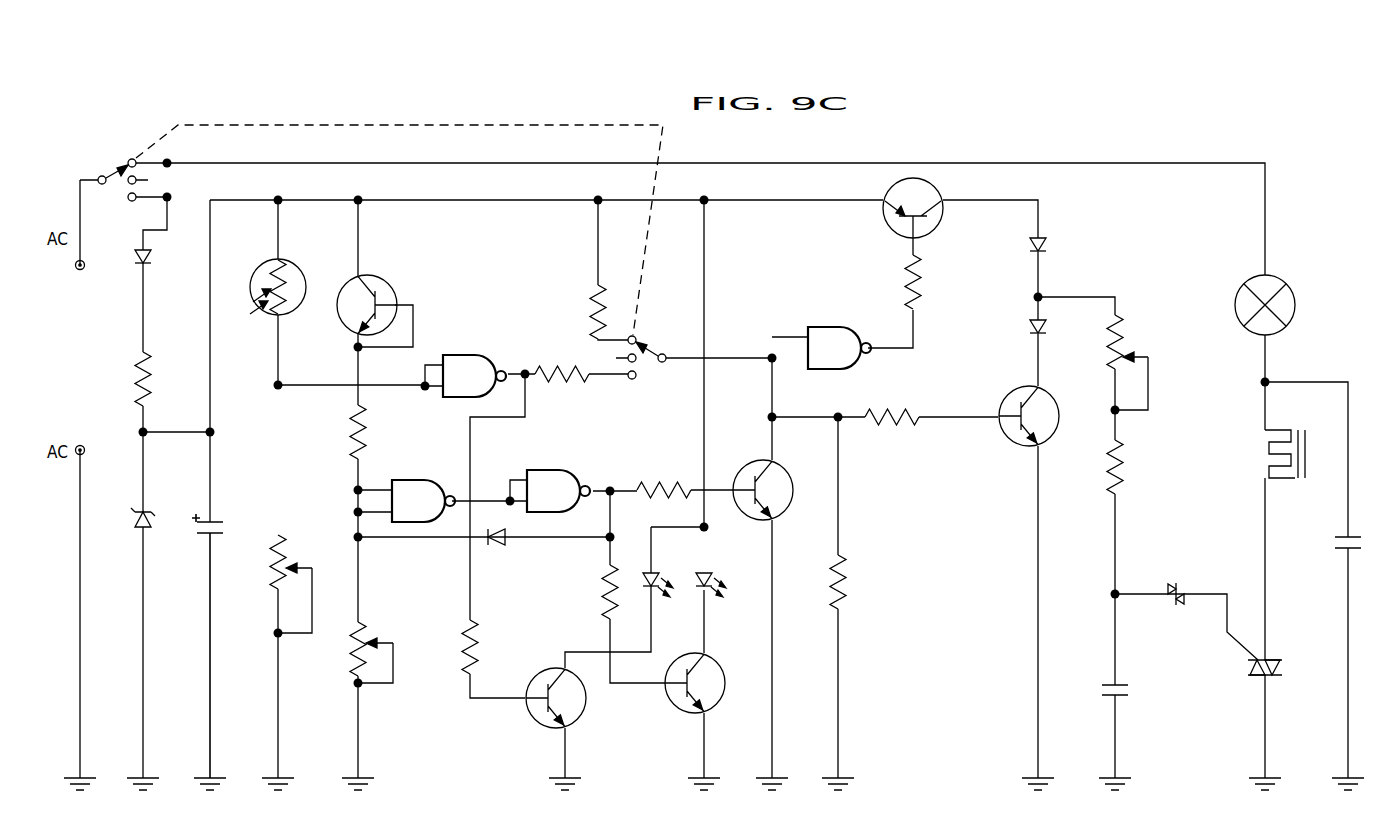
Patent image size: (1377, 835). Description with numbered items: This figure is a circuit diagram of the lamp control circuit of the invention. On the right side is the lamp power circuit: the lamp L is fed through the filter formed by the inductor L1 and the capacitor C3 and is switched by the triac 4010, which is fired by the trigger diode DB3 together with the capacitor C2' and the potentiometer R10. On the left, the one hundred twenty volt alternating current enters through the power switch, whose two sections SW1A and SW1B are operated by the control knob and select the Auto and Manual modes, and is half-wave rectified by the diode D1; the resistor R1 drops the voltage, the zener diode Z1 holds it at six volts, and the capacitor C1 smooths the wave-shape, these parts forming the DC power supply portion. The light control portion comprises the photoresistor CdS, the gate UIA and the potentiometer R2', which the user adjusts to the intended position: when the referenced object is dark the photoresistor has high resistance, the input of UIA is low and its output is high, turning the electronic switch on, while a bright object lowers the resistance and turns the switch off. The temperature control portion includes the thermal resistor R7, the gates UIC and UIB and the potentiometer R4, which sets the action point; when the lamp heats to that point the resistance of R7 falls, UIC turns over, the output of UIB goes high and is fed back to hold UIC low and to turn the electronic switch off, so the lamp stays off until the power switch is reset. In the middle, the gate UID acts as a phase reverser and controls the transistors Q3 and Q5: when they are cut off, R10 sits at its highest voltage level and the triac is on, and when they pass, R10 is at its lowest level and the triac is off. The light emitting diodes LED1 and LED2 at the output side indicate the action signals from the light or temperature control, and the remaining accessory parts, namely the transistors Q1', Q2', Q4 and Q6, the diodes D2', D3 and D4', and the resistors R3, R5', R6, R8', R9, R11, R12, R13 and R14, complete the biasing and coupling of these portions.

The power switch section SW1A is at (104, 180).
The power switch section SW1B is at (647, 359).
The diode D1 is at (131, 301).
The resistor R1 is at (157, 392).
The zener diode Z1 is at (137, 605).
The capacitor C1 is at (215, 636).
The photoresistor CdS is at (274, 277).
The potentiometer R2' is at (274, 656).
The transistor Q1' is at (370, 293).
The resistor R3 is at (345, 432).
The potentiometer R4 is at (383, 652).
The IC UIA is at (474, 376).
The IC UIB is at (839, 348).
The IC UIC is at (423, 501).
The IC UID is at (558, 491).
The diode D2' is at (493, 527).
The resistor R5' is at (488, 635).
The resistor R6 is at (562, 363).
The thermal resistor R7 is at (586, 312).
The resistor R8' is at (592, 592).
The transistor Q2' is at (556, 686).
The light emitting diode LED1 is at (670, 575).
The light emitting diode LED2 is at (722, 575).
The transistor Q3 is at (703, 679).
The resistor R9 is at (664, 474).
The transistor Q4 is at (772, 475).
The resistor R11 is at (892, 404).
The resistor R12 is at (858, 582).
The transistor Q5 is at (899, 208).
The potentiometer R10 is at (930, 282).
The transistor Q6 is at (1022, 405).
The diode D3 is at (1053, 248).
The diode D4' is at (1055, 327).
The variable resistor R13 is at (1136, 362).
The resistor R14 is at (1135, 467).
The trigger diode DB3 is at (1174, 612).
The capacitor C2' is at (1126, 681).
The triac 4010 is at (1249, 683).
The lamp L is at (1268, 297).
The filter inductor L1 is at (1274, 454).
The filter capacitor C3 is at (1356, 528).